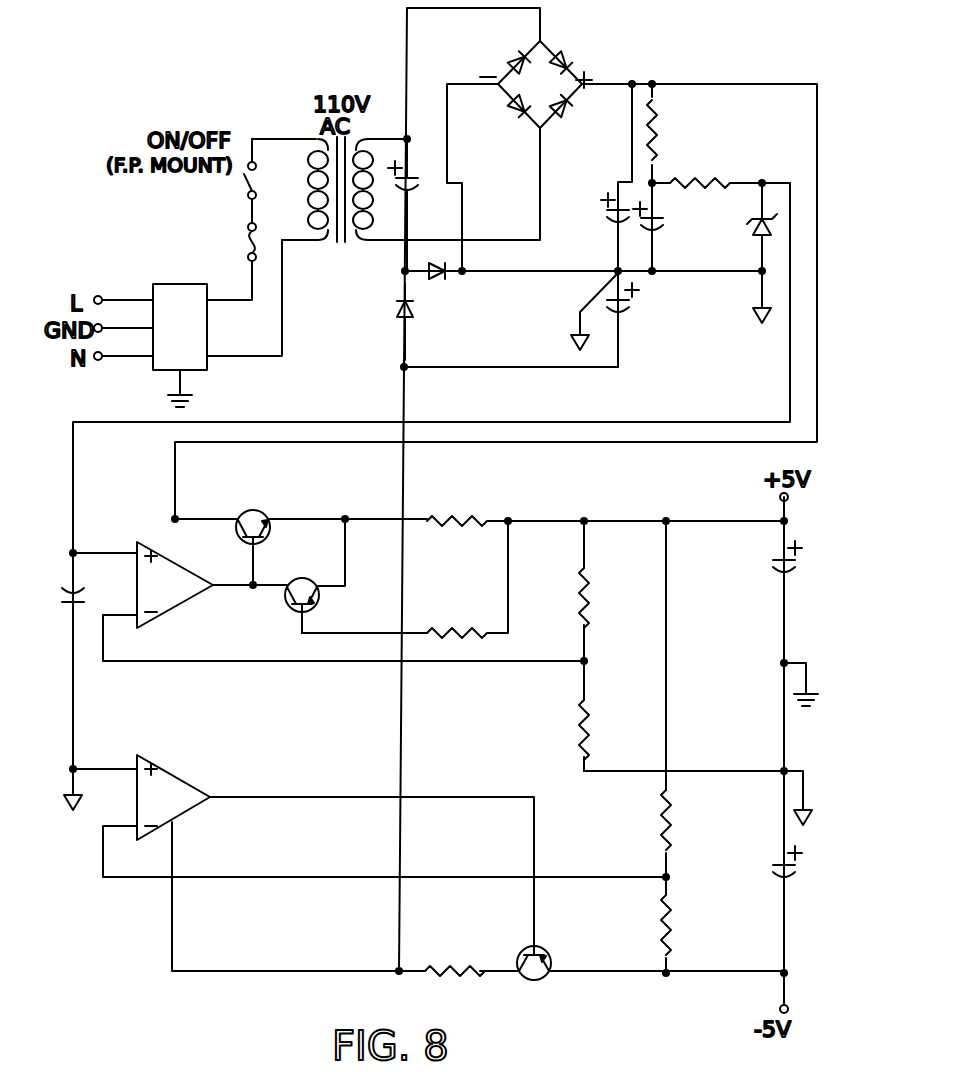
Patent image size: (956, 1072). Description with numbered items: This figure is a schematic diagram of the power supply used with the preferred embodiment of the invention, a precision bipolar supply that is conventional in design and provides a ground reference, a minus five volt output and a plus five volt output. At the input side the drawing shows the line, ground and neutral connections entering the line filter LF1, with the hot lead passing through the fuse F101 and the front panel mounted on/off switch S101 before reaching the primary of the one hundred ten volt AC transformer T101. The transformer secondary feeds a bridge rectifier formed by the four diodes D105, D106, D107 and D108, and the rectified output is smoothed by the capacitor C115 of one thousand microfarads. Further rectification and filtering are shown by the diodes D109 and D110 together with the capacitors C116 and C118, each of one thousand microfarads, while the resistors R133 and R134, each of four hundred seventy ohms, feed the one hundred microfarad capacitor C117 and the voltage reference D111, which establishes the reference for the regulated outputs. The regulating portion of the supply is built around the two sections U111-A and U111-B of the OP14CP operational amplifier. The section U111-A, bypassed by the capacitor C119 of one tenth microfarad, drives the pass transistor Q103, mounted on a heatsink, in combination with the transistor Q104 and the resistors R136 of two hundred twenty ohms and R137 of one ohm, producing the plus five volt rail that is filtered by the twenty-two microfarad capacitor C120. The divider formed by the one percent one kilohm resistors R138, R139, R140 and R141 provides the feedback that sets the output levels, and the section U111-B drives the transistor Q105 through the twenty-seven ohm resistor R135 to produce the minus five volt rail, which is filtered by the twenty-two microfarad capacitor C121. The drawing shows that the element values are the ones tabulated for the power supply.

The on/off switch (front panel mount) S101 is at (223, 181).
The fuse F101 is at (226, 238).
The line filter LF1 is at (192, 324).
The 110V AC power transformer T101 is at (340, 206).
The capacitor C115 is at (427, 205).
The bridge rectifier diode 1N4004 D105 is at (497, 47).
The bridge rectifier diode 1N4004 D106 is at (497, 126).
The bridge rectifier diode 1N4004 D107 is at (596, 46).
The bridge rectifier diode 1N4004 D108 is at (582, 126).
The diode 1N4004 D109 is at (460, 298).
The diode 1N4004 D110 is at (365, 328).
The voltage reference LM336Z D111 is at (722, 244).
The resistor R133 is at (686, 130).
The resistor R134 is at (712, 166).
The capacitor C116 is at (592, 223).
The capacitor C117 is at (673, 227).
The capacitor C118 is at (644, 319).
The integrated circuit section U111-A is at (172, 585).
The integrated circuit section U111-B is at (169, 799).
The transistor TIP-31 on heatsink Q103 is at (288, 517).
The transistor 2N4403 Q104 is at (261, 612).
The transistor TIP-32 Q105 is at (546, 990).
The resistor R135 is at (454, 958).
The resistor R136 is at (457, 618).
The resistor R137 is at (457, 506).
The resistor R138 is at (616, 598).
The resistor R139 is at (616, 730).
The resistor R140 is at (634, 820).
The resistor R141 is at (639, 925).
The capacitor C119 is at (98, 586).
The capacitor C120 is at (765, 572).
The capacitor C121 is at (762, 879).